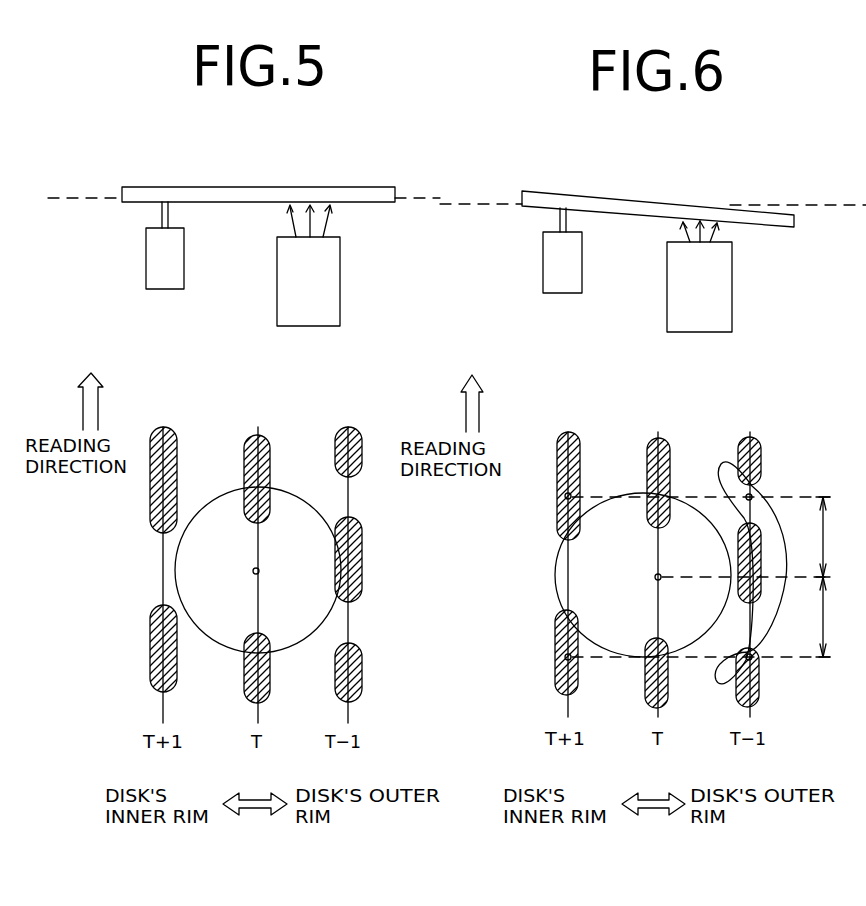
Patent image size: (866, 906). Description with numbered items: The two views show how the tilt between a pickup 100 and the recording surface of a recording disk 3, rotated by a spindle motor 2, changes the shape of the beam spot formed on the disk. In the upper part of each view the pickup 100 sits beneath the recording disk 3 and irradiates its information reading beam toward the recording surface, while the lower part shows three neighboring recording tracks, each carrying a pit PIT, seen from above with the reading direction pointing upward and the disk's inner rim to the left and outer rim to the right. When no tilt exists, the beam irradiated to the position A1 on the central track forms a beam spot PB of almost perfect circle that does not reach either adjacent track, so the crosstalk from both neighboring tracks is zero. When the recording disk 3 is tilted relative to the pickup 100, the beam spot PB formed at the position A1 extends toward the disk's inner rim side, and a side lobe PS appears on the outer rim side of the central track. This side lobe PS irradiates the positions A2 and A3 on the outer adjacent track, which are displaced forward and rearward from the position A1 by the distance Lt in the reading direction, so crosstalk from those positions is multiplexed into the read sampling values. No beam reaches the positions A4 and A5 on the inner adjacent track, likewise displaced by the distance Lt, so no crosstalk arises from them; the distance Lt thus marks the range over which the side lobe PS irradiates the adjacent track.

In FIG. 5, the spindle motor 2 is at (146, 256).
In FIG. 6, the spindle motor 2 is at (543, 259).
In FIG. 5, the recording disk 3 is at (344, 187).
In FIG. 6, the recording disk 3 is at (675, 206).
In FIG. 5, the pickup 100 is at (277, 313).
In FIG. 6, the pickup 100 is at (667, 316).
In FIG. 5, the beam spot PB is at (294, 508).
In FIG. 6, the beam spot PB is at (605, 508).
In FIG. 6, the side lobe PS is at (726, 462).
In FIG. 5, the pit PIT is at (150, 651).
In FIG. 6, the pit PIT is at (555, 649).
In FIG. 5, the position A1 is at (260, 569).
In FIG. 6, the position A1 is at (662, 574).
In FIG. 6, the position A2 is at (752, 494).
In FIG. 6, the position A3 is at (753, 661).
In FIG. 6, the position A4 is at (565, 493).
In FIG. 6, the position A5 is at (571, 661).
In FIG. 6, the distance Lt is at (831, 577).